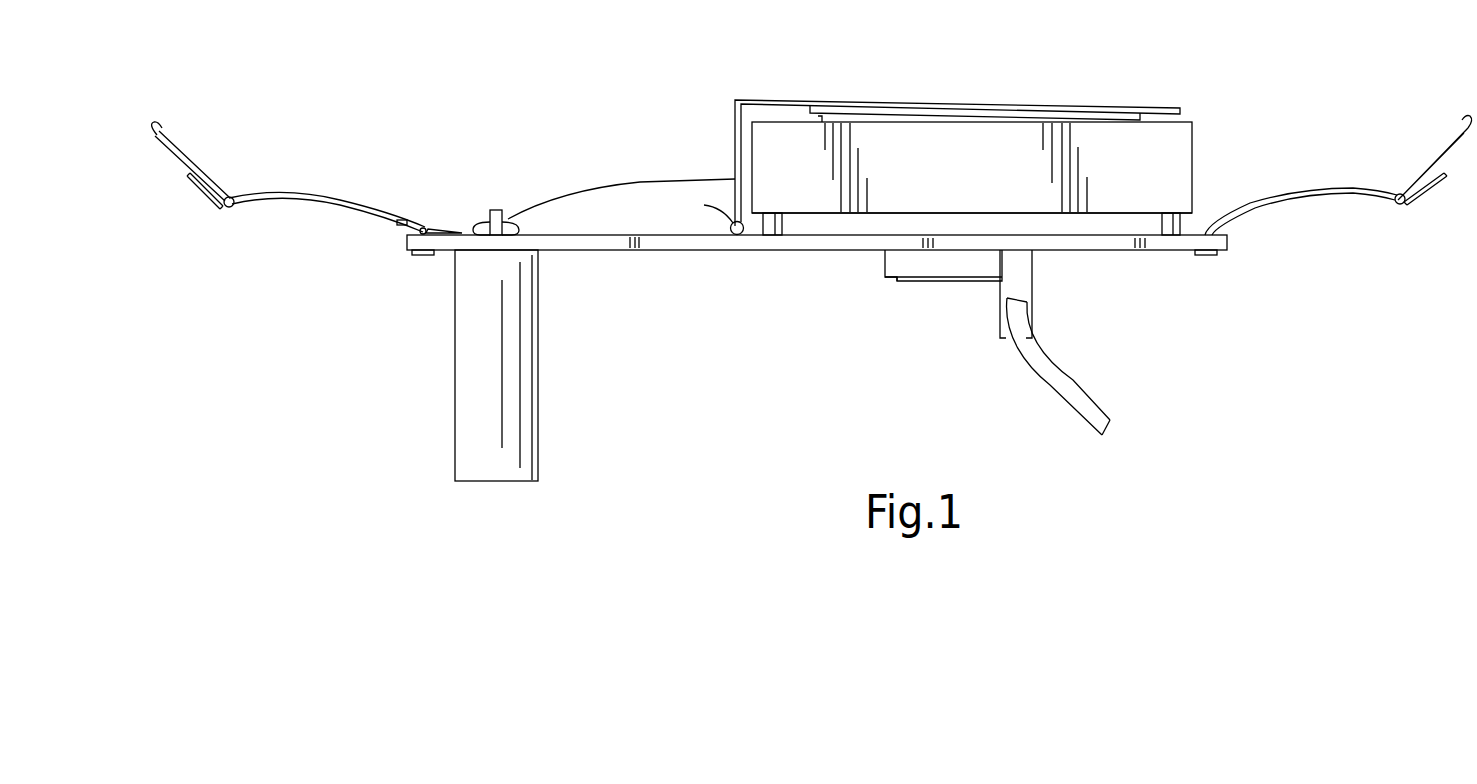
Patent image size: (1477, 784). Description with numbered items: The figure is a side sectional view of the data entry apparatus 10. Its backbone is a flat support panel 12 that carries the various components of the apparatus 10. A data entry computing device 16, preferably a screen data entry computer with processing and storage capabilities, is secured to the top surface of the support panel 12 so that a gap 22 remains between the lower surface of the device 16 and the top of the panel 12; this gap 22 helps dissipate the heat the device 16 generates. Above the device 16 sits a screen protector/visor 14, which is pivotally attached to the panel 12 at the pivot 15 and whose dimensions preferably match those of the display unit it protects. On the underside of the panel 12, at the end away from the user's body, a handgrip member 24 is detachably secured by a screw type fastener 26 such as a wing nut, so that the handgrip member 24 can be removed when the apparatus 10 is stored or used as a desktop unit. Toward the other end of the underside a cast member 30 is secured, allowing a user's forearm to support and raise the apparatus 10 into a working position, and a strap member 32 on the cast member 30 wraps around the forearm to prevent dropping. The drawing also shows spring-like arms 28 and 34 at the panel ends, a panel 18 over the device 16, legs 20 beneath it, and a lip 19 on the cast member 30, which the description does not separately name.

The data entry apparatus 10 is at (1168, 337).
The support panel 12 is at (686, 244).
The screen protector/visor 14 is at (1037, 108).
The pivotal attachment 15 is at (710, 214).
The data entry computing device 16 is at (768, 130).
The upper panel 18 is at (892, 116).
The bracket lip 19 is at (900, 286).
The support legs 20 is at (783, 227).
The gap 22 is at (938, 227).
The handgrip member 24 is at (517, 375).
The screw type fastener 26 is at (481, 228).
The spring arm 28 is at (172, 149).
The cast member 30 is at (948, 270).
The strap member 32 is at (1036, 374).
The leaf spring 34 is at (320, 200).